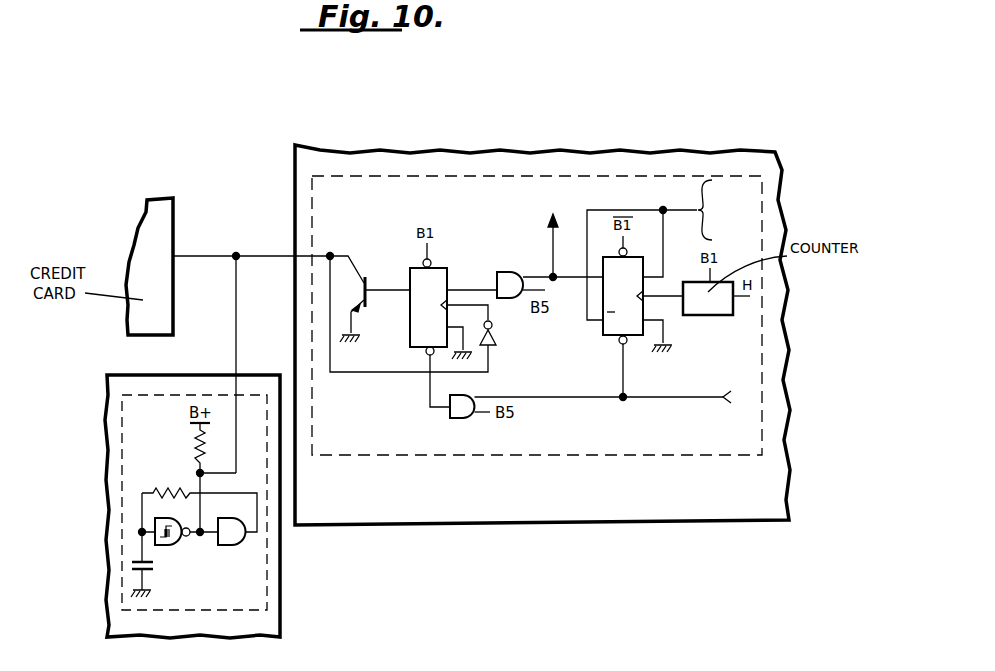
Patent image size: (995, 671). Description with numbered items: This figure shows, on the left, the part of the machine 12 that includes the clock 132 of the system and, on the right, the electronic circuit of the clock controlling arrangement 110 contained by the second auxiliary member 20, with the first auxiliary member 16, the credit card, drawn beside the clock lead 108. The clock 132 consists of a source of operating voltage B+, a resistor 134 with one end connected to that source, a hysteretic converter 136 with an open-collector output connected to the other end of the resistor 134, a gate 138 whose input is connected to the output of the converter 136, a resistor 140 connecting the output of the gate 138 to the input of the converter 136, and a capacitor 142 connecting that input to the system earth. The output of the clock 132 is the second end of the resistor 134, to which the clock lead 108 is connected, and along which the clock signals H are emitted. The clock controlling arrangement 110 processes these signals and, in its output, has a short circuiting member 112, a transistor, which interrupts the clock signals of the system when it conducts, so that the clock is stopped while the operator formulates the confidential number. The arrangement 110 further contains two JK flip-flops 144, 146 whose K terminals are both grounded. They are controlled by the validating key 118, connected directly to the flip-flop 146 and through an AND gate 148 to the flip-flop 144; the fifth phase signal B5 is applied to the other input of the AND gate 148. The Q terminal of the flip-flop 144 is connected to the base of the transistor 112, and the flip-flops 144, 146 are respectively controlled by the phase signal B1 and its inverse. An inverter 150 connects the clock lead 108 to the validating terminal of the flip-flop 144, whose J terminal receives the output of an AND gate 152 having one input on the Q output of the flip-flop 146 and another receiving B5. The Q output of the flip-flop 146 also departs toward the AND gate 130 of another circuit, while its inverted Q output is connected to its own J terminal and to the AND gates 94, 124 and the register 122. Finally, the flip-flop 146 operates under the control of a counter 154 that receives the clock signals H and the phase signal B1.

The first auxiliary member 16 is at (132, 244).
The second auxiliary member 20 is at (293, 180).
The clock lead 108 is at (236, 336).
The machine 12 is at (282, 583).
The clock 132 is at (200, 612).
The resistor 134 is at (197, 452).
The resistor 140 is at (193, 497).
The hysteretic converter 136 is at (171, 546).
The gate 138 is at (228, 546).
The capacitor 142 is at (130, 570).
The clock controlling arrangement 110 is at (536, 455).
The short circuiting member 112 is at (368, 277).
The JK flip-flop 144 is at (410, 336).
The inverter 150 is at (494, 346).
The AND gate 152 is at (512, 273).
The AND gate 130 is at (553, 234).
The JK flip-flop 146 is at (602, 336).
The counter 154 is at (714, 316).
The AND gate 148 is at (462, 420).
The validating key 118 is at (620, 393).
The AND gate 94 is at (727, 190).
The register 122 is at (729, 210).
The AND gate 124 is at (729, 230).